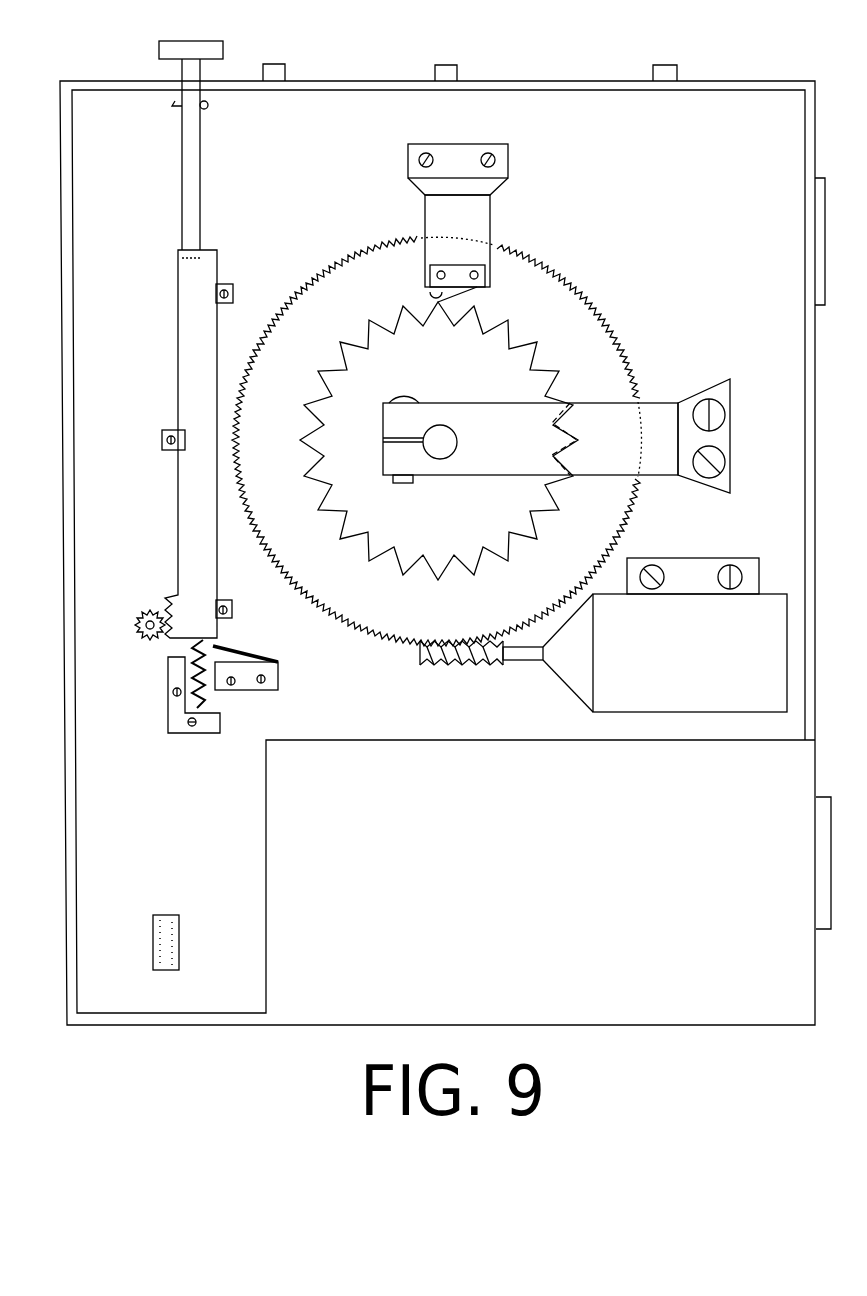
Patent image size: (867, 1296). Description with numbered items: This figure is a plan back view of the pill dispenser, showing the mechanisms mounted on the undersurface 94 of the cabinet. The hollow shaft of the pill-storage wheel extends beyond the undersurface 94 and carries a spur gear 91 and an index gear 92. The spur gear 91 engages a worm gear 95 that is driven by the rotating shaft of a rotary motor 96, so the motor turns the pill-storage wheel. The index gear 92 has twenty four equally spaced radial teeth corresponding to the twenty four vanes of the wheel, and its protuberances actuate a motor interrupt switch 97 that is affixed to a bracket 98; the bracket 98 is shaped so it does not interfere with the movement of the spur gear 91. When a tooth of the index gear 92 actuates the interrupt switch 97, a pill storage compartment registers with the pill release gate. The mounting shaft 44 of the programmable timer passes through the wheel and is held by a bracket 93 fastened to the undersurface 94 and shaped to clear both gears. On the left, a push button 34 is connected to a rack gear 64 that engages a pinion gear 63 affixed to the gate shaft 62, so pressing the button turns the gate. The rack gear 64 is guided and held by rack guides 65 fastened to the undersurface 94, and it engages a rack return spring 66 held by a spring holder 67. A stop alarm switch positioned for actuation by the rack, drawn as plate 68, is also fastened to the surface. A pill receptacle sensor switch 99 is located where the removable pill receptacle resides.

The push button 34 is at (159, 50).
The mounting shaft 44 is at (457, 437).
The gate shaft 62 is at (140, 632).
The pinion gear 63 is at (147, 612).
The rack gear 64 is at (178, 577).
The rack guides 65 is at (216, 606).
The rack return spring 66 is at (202, 688).
The spring holder 67 is at (180, 735).
The stop plate 68 is at (278, 676).
The spur gear 91 is at (582, 295).
The index gear 92 is at (508, 333).
The bracket 93 is at (658, 403).
The undersurface 94 is at (616, 181).
The worm gear 95 is at (435, 665).
The rotary motor 96 is at (563, 683).
The motor interrupt switch 97 is at (485, 275).
The bracket 98 is at (490, 223).
The pill receptacle sensor switch 99 is at (175, 913).